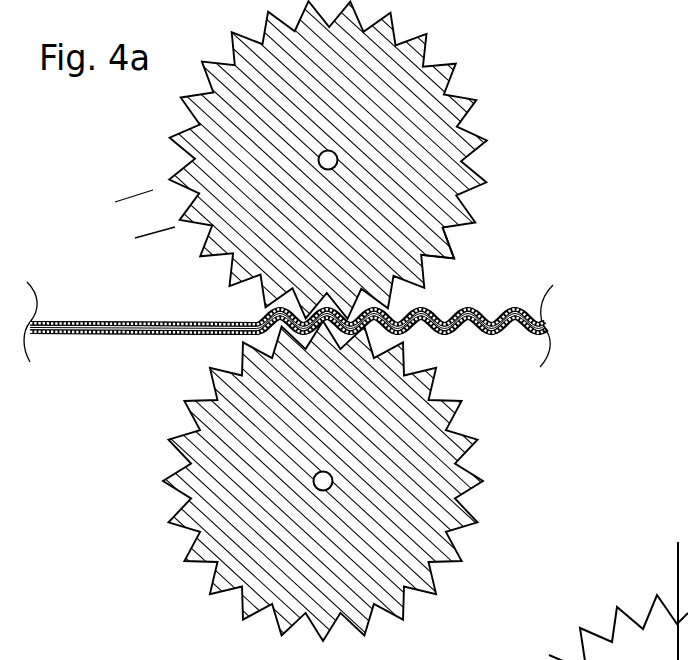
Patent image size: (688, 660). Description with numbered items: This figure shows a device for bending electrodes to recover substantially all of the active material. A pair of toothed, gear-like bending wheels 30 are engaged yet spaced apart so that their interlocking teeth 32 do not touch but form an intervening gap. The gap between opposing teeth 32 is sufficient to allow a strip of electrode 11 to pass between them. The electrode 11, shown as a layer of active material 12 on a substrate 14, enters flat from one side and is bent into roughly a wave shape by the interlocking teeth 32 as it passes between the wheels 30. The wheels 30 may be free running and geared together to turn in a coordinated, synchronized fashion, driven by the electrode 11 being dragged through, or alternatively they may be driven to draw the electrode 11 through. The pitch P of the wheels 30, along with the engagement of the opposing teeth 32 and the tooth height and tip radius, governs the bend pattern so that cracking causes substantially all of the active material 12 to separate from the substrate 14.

The electrode 11 is at (88, 362).
The active material 12 is at (143, 337).
The substrate 14 is at (108, 322).
The bending wheels 30 is at (430, 120).
The teeth 32 is at (450, 260).
The pitch P is at (155, 235).